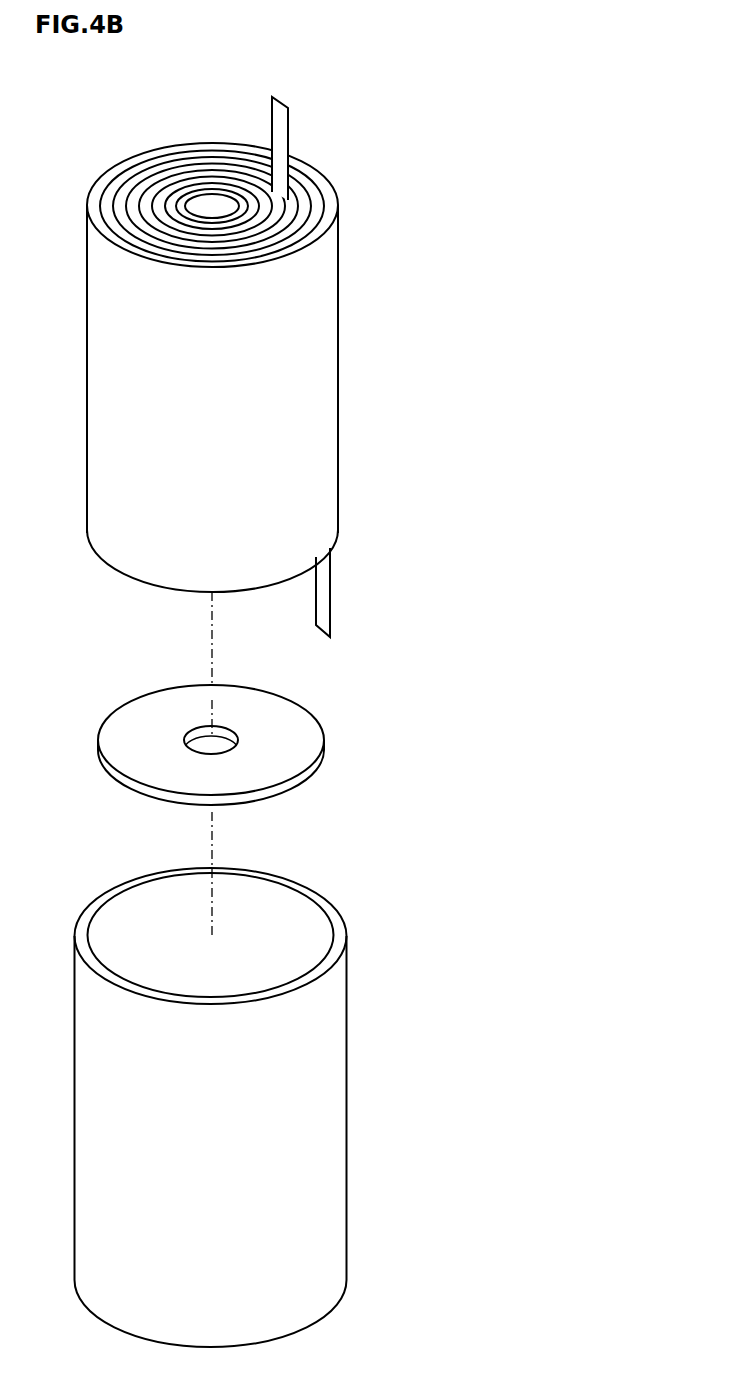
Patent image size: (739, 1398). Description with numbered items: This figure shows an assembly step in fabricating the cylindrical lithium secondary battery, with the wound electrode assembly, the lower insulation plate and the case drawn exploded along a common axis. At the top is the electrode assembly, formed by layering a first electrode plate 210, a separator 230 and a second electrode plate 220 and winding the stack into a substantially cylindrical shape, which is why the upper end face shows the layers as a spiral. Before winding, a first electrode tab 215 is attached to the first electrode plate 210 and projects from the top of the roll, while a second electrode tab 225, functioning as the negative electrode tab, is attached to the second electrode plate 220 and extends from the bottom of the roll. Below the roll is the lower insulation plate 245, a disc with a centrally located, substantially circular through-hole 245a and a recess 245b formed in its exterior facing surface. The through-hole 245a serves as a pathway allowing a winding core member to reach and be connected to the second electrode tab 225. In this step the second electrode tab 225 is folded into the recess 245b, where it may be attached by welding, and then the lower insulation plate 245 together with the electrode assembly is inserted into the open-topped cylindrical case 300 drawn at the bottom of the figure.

The first electrode plate 210 is at (282, 367).
The first electrode tab 215 is at (280, 122).
The second electrode plate 220 is at (325, 227).
The second electrode tab 225 is at (320, 590).
The separator 230 is at (318, 202).
The lower insulation plate 245 is at (283, 738).
The through-hole 245a is at (227, 740).
The recess 245b is at (325, 778).
The cylindrical case 300 is at (372, 1105).